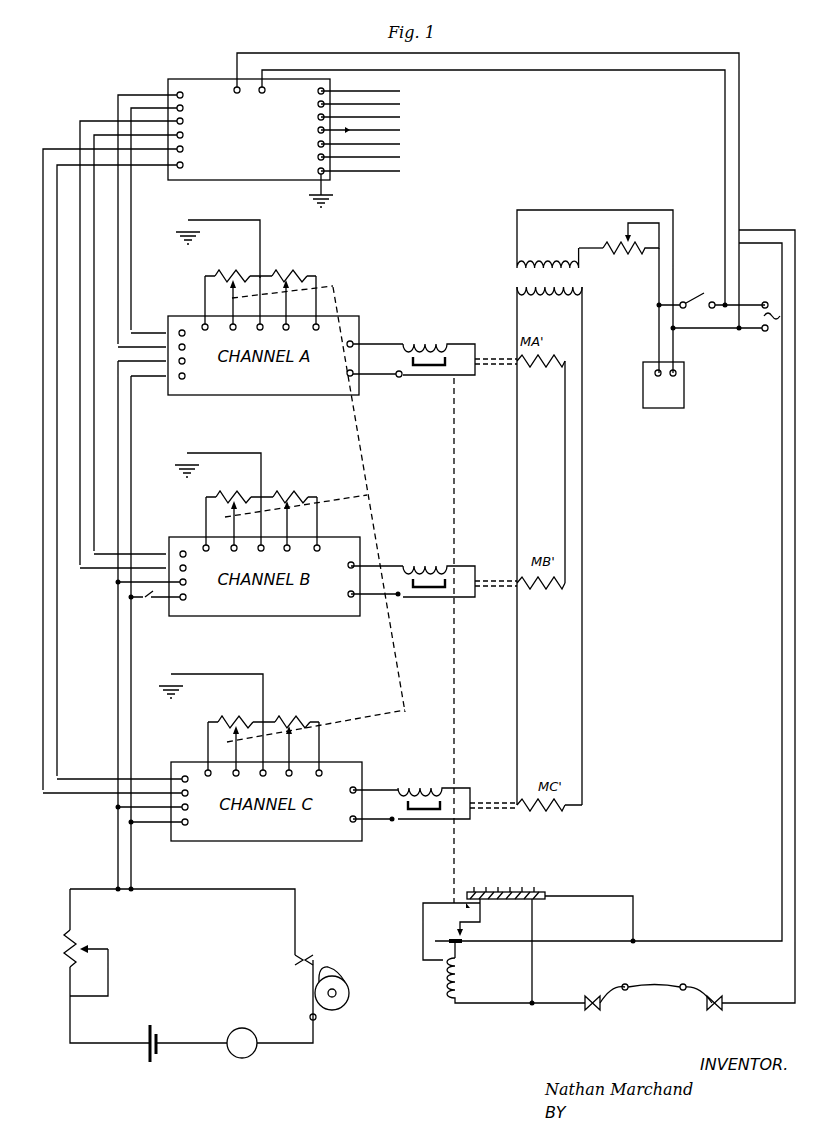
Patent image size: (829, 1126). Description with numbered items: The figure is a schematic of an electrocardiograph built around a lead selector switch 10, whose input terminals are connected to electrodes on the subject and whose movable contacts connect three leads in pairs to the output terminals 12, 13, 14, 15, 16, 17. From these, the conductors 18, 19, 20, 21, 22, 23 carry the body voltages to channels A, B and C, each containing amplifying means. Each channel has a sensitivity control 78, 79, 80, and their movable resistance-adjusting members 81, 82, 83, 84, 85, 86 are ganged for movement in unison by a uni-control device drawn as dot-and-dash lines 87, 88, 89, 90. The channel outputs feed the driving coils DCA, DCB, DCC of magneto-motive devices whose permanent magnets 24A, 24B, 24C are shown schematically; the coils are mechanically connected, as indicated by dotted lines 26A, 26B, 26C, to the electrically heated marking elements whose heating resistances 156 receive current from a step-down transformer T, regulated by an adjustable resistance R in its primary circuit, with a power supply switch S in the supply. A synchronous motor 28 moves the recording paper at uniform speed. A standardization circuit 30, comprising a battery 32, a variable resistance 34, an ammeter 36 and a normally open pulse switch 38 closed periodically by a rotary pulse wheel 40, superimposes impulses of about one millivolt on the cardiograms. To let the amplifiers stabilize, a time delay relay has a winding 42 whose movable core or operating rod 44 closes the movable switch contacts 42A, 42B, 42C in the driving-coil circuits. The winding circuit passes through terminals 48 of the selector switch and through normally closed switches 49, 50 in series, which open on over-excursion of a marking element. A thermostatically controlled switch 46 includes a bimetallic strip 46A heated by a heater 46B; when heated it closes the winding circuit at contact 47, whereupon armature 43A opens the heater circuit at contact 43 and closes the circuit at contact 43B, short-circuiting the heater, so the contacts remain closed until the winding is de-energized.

The lead selector switch 10 is at (206, 78).
The output terminal 12 is at (181, 105).
The output terminal 13 is at (181, 92).
The output terminal 14 is at (186, 150).
The output terminal 15 is at (184, 122).
The output terminal 16 is at (181, 168).
The output terminal 17 is at (180, 169).
The conductor 18 is at (132, 222).
The conductor 19 is at (95, 256).
The conductor 20 is at (83, 200).
The conductor 21 is at (59, 207).
The conductor 22 is at (58, 298).
The conductor 23 is at (44, 190).
The terminals 48 is at (265, 92).
The sensitivity control 78 is at (292, 265).
The sensitivity control 79 is at (281, 484).
The sensitivity control 80 is at (283, 705).
The movable resistance-adjusting member 81 is at (233, 303).
The movable resistance-adjusting member 82 is at (287, 300).
The movable resistance-adjusting member 83 is at (232, 522).
The movable resistance-adjusting member 84 is at (287, 520).
The movable resistance-adjusting member 85 is at (233, 740).
The movable resistance-adjusting member 86 is at (288, 735).
The uni-control device 87 is at (334, 288).
The uni-control device 88 is at (364, 496).
The uni-control device 89 is at (356, 716).
The uni-control device 90 is at (372, 512).
The driving coil DCA is at (414, 350).
The driving coil DCB is at (413, 571).
The driving coil DCC is at (411, 790).
The permanent magnet 24A is at (440, 377).
The permanent magnet 24B is at (443, 598).
The permanent magnet 24C is at (446, 812).
The movable switch contact 42A is at (415, 377).
The movable switch contact 42B is at (405, 598).
The movable switch contact 42C is at (400, 820).
The dotted line 26A is at (497, 366).
The dotted line 26B is at (497, 588).
The dotted line 26C is at (497, 809).
The heater resistor 156 is at (540, 366).
The step-down transformer T is at (517, 266).
The adjustable resistance R is at (627, 252).
The power supply switch S is at (705, 292).
The synchronous motor 28 is at (643, 388).
The movable core 44 is at (457, 876).
The thermostatically controlled switch 46 is at (497, 903).
The bimetallic strip 46A is at (546, 900).
The heater 46B is at (507, 890).
The contact 47 is at (466, 908).
The contact 43 is at (460, 946).
The armature 43A is at (464, 938).
The contact 43B is at (442, 946).
The winding 42 is at (445, 990).
The normally closed switch 49 is at (601, 1005).
The normally closed switch 50 is at (688, 992).
The circuit 30 is at (224, 976).
The battery 32 is at (160, 1056).
The variable resistance 34 is at (82, 950).
The ammeter 36 is at (252, 1057).
The pulse switch 38 is at (312, 953).
The rotary pulse wheel 40 is at (338, 1011).